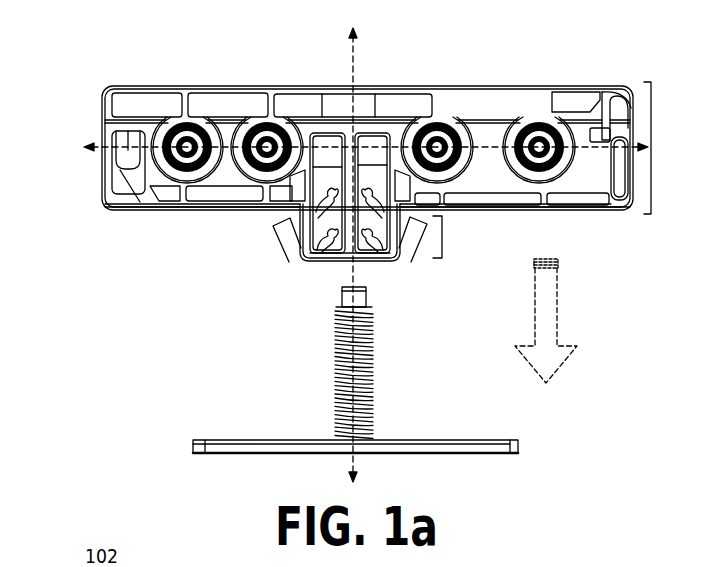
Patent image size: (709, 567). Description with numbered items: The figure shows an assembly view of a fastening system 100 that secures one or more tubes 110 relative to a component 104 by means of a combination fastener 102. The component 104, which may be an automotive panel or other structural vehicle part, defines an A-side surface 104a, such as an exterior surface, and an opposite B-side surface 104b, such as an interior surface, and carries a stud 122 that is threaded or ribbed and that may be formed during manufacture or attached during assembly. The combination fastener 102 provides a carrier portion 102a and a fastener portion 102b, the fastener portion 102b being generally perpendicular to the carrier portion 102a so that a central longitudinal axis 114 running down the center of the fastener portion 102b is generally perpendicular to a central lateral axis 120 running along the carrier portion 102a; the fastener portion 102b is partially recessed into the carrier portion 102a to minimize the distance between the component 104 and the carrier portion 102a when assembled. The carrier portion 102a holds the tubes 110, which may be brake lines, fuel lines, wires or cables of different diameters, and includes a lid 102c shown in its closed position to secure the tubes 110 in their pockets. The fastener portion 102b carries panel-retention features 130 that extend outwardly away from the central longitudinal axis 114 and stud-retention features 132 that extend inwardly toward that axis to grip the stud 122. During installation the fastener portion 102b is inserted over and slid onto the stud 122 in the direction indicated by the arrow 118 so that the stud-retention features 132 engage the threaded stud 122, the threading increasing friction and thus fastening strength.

The fastening system 100 is at (663, 44).
The combination fastener 102 is at (128, 60).
The carrier portion 102a is at (651, 147).
The fastener portion 102b is at (442, 237).
The lid 102c is at (303, 84).
The component 104 is at (206, 408).
The A-side surface 104a is at (285, 439).
The B-side surface 104b is at (203, 457).
The tubes 110 is at (570, 123).
The central longitudinal axis 114 is at (353, 63).
The arrow 118 is at (557, 300).
The central lateral axis 120 is at (100, 153).
The stud 122 is at (375, 372).
The panel-retention features 130 is at (272, 230).
The stud-retention features 132 is at (328, 237).